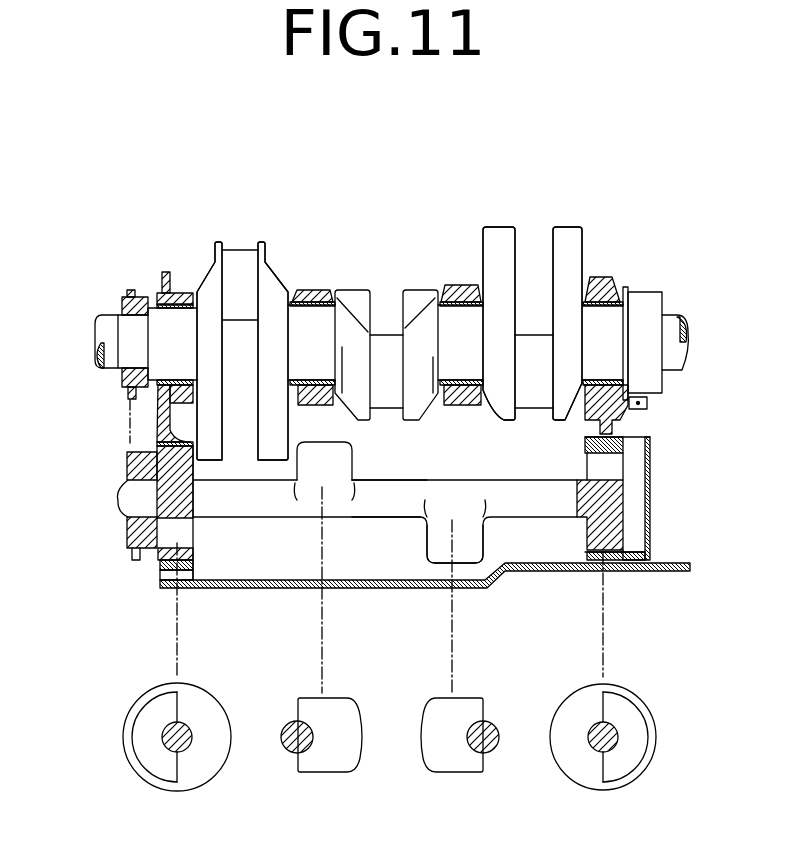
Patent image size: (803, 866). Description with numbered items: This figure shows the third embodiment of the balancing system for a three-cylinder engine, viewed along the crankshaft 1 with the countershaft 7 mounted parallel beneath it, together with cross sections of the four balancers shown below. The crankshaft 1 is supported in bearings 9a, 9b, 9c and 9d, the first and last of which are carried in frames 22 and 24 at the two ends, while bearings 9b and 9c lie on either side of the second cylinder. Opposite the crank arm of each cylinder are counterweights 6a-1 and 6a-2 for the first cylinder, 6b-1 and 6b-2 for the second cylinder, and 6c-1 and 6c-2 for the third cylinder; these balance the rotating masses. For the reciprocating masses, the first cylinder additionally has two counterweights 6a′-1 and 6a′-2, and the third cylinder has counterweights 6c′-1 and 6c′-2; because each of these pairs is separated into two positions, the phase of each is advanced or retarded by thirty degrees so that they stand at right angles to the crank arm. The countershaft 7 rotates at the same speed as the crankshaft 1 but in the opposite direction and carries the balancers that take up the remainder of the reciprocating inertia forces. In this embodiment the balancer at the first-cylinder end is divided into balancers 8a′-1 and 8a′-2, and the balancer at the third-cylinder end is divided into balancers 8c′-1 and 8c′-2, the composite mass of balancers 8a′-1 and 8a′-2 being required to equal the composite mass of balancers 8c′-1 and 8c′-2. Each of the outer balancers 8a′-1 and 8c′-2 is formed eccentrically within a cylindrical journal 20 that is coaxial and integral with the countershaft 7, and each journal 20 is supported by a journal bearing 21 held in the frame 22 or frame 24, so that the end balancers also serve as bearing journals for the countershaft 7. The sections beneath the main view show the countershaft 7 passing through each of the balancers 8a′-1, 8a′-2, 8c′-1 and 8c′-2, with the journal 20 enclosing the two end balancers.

The crankshaft 1 is at (103, 331).
The bearing 9a is at (157, 296).
The bearing 9b is at (315, 293).
The bearing 9c is at (465, 292).
The bearing 9d is at (602, 298).
The counterweight 6a-1 is at (215, 463).
The counterweight 6a′-1 is at (213, 466).
The counterweight 6a-2 is at (279, 445).
The counterweight 6a′-2 is at (332, 351).
The counterweight 6b-1 is at (350, 292).
The counterweight 6b-2 is at (415, 292).
The counterweight 6c-1 is at (490, 228).
The counterweight 6c′-1 is at (478, 300).
The counterweight 6c-2 is at (583, 257).
The counterweight 6c′-2 is at (596, 312).
The frame 22 is at (163, 413).
The frame 24 is at (603, 413).
The balancer 8a′-1 is at (167, 462).
The balancer 8a′-2 is at (334, 467).
The balancer 8c′-1 is at (437, 538).
The balancer 8c′-2 is at (595, 530).
The countershaft 7 is at (448, 490).
The journal 20 is at (193, 557).
The journal bearing 21 is at (160, 557).